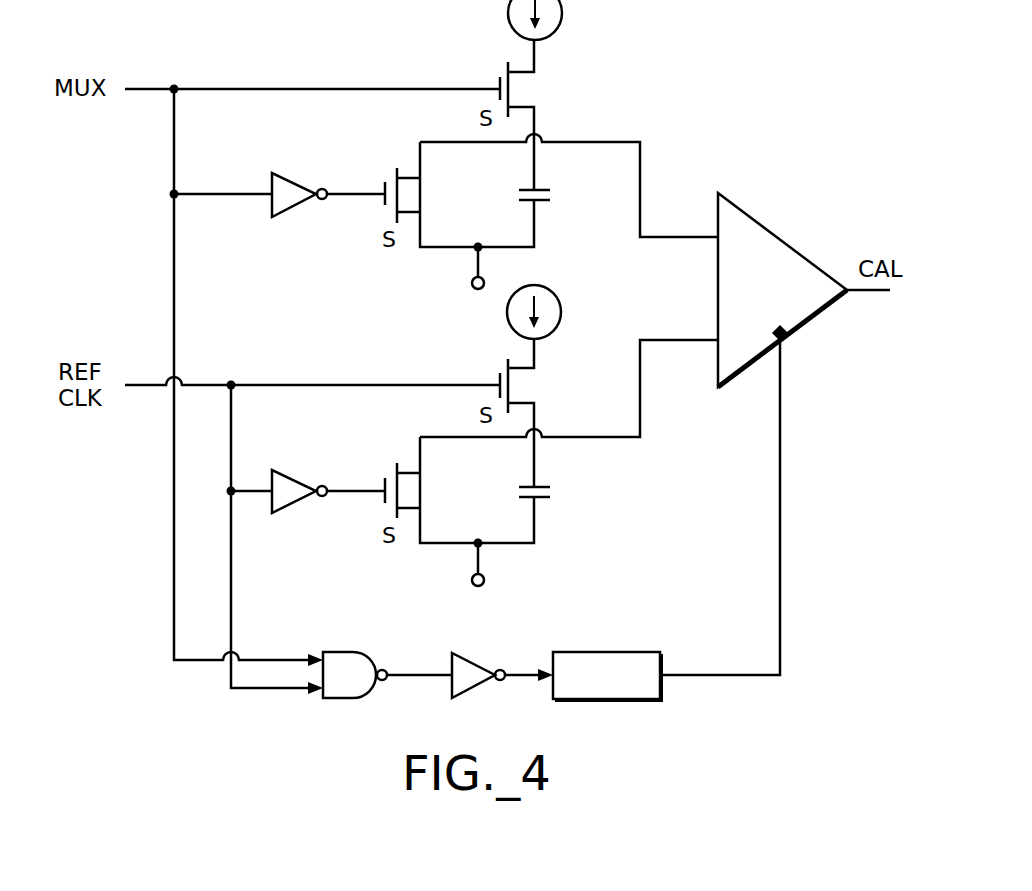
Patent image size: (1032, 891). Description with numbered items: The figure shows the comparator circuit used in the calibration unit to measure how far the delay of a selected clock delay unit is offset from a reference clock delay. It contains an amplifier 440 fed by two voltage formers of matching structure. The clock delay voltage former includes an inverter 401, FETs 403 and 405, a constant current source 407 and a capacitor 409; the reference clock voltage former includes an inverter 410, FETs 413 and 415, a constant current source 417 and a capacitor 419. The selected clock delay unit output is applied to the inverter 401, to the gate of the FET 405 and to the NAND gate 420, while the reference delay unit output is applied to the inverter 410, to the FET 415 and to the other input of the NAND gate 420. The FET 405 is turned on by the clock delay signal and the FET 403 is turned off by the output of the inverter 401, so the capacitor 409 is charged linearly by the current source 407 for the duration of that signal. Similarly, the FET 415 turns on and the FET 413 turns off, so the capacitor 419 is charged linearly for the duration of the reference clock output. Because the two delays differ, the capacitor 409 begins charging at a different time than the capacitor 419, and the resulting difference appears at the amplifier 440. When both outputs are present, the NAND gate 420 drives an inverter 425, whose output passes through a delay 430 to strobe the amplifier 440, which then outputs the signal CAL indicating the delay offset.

The inverter 401 is at (302, 210).
The FET 403 is at (385, 185).
The FET 405 is at (500, 80).
The constant current source 407 is at (562, 14).
The capacitor 409 is at (540, 187).
The inverter 410 is at (300, 507).
The FET 413 is at (385, 480).
The FET 415 is at (500, 378).
The constant current source 417 is at (561, 302).
The capacitor 419 is at (540, 485).
The NAND gate 420 is at (340, 652).
The inverter 425 is at (465, 660).
The delay 430 is at (595, 652).
The amplifier 440 is at (748, 213).